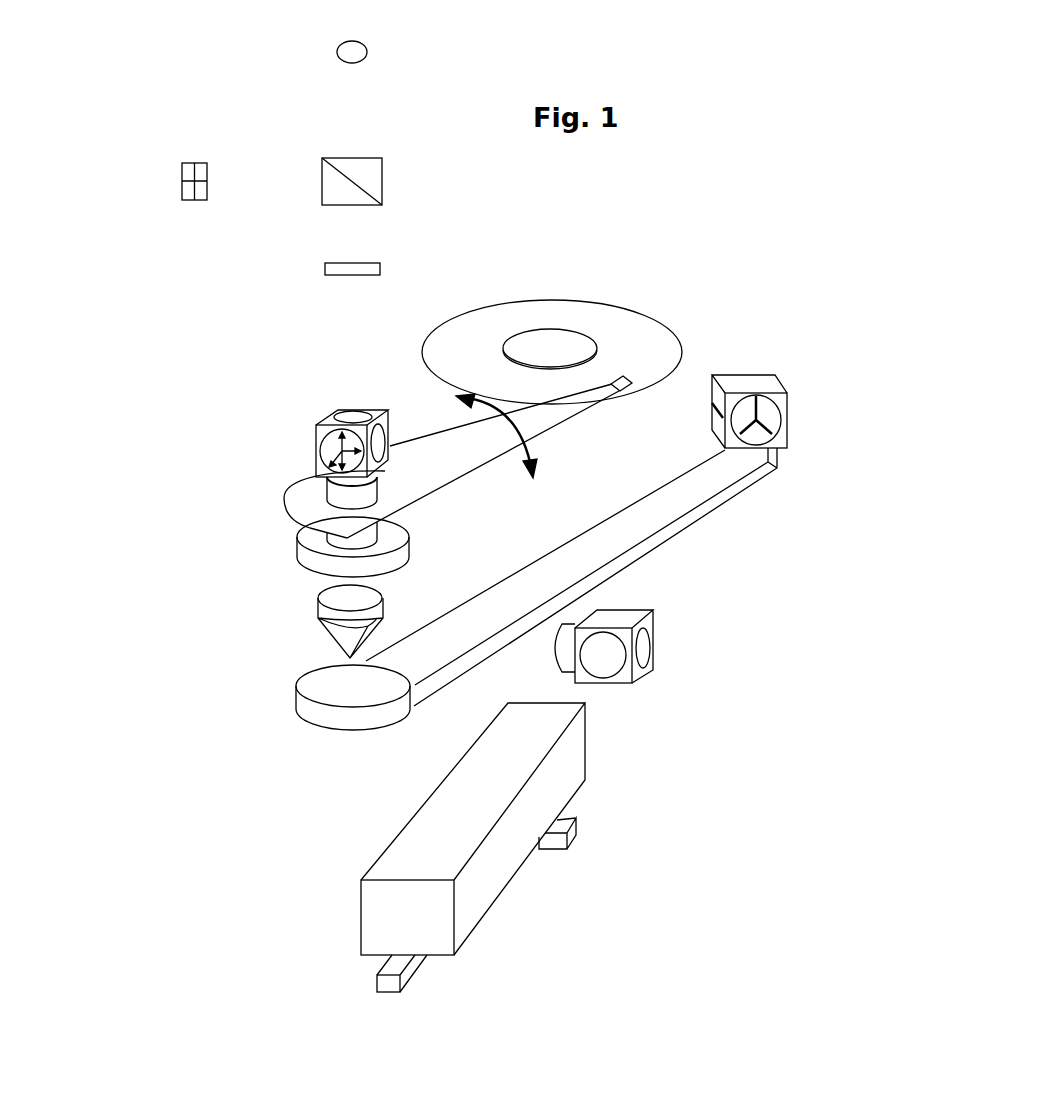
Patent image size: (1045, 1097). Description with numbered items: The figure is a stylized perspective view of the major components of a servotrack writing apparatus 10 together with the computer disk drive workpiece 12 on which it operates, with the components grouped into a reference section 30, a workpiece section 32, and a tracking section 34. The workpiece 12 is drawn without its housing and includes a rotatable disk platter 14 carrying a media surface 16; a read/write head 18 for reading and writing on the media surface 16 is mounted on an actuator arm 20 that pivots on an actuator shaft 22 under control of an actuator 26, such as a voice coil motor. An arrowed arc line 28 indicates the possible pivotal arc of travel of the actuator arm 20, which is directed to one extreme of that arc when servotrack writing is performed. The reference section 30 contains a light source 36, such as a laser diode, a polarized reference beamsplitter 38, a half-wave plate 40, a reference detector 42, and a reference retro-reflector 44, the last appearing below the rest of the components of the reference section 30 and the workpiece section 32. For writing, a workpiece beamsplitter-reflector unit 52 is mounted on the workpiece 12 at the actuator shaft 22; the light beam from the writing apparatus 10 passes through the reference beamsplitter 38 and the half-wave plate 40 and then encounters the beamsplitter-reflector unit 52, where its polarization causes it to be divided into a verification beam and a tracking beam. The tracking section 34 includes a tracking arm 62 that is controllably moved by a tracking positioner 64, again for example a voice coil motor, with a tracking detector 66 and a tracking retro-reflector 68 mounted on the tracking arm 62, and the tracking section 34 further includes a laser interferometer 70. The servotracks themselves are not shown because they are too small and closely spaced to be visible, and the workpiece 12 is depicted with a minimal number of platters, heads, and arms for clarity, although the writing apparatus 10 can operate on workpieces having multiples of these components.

The writing apparatus 10 is at (222, 810).
The workpiece 12 is at (672, 277).
The disk platter 14 is at (418, 343).
The media surface 16 is at (557, 310).
The read/write head 18 is at (622, 390).
The actuator arm 20 is at (402, 483).
The actuator shaft 22 is at (337, 492).
The actuator 26 is at (293, 545).
The arrowed arc line 28 is at (475, 406).
The reference section 30 is at (175, 33).
The workpiece section 32 is at (175, 312).
The tracking section 34 is at (797, 332).
The light source 36 is at (337, 52).
The polarized reference beamsplitter 38 is at (322, 190).
The half-wave plate 40 is at (325, 265).
The reference detector 42 is at (195, 163).
The reference retro-reflector 44 is at (318, 607).
The workpiece beamsplitter-reflector unit 52 is at (316, 452).
The tracking arm 62 is at (702, 482).
The tracking positioner 64 is at (353, 733).
The tracking detector 66 is at (713, 420).
The tracking retro-reflector 68 is at (752, 405).
The laser interferometer 70 is at (634, 757).